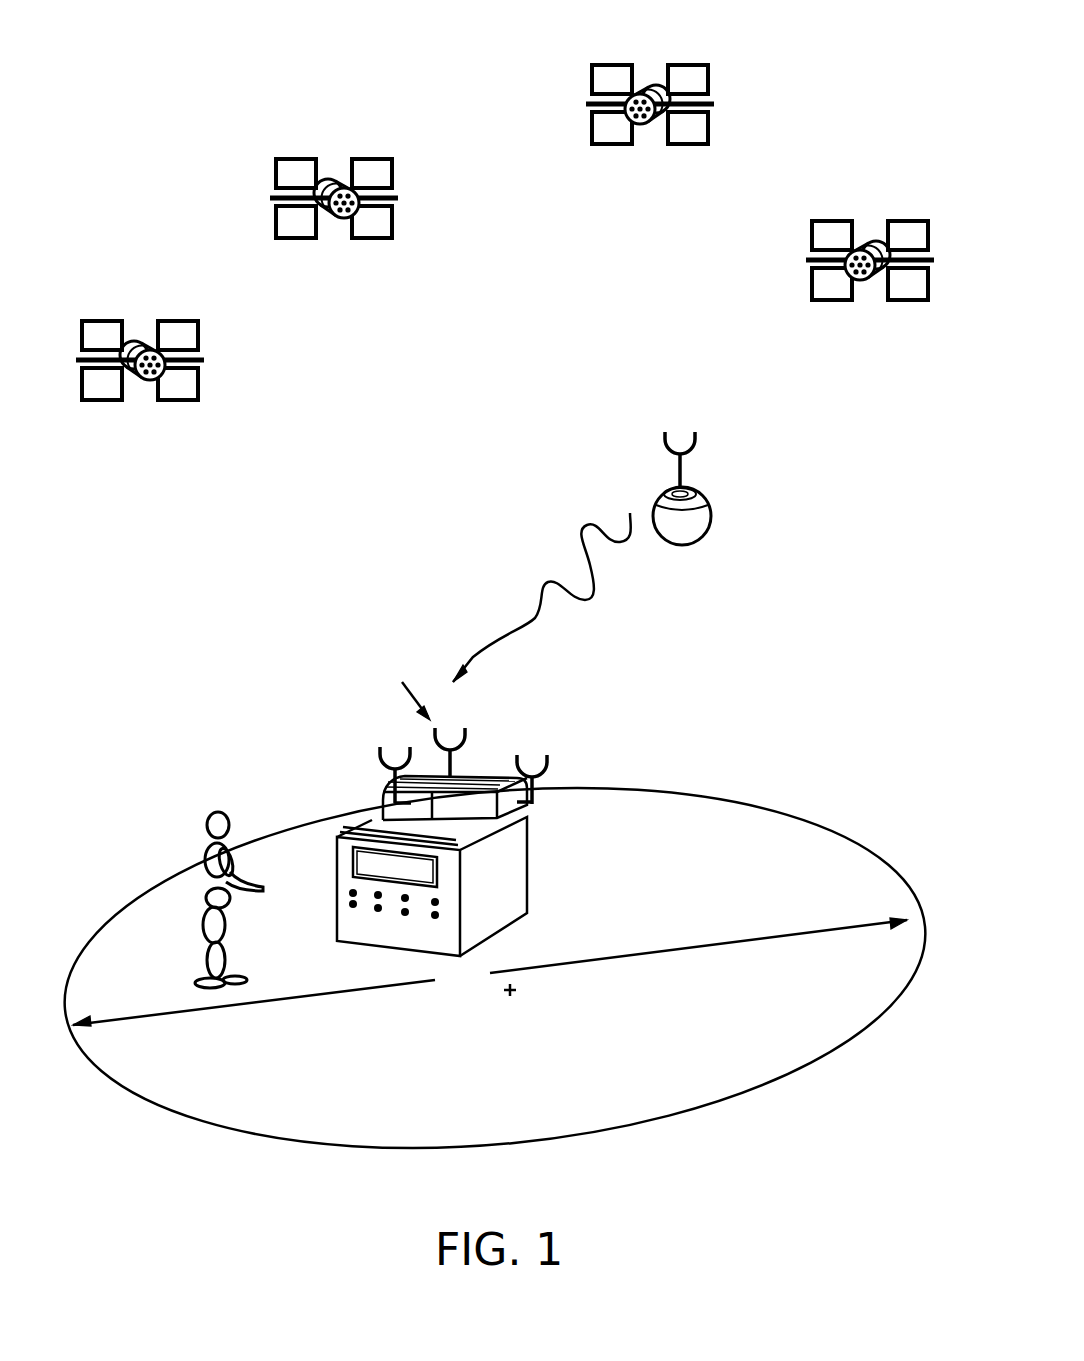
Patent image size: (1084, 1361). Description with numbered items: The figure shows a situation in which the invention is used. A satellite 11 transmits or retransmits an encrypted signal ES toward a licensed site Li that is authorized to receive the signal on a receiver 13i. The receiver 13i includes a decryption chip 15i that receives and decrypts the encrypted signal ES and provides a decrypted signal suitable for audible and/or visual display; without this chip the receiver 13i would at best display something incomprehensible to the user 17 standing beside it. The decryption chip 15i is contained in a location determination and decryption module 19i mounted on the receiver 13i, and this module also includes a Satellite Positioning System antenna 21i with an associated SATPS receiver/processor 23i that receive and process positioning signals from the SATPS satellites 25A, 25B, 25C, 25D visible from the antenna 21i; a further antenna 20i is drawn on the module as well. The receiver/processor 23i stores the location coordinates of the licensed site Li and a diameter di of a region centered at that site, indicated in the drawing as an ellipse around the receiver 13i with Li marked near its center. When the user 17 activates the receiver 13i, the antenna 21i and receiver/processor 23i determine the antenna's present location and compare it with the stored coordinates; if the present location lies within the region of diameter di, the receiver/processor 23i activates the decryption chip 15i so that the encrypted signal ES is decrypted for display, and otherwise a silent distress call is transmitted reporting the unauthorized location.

The satellite 11 is at (680, 522).
The receiver 13i is at (503, 898).
The decryption chip 15i is at (398, 808).
The user 17 is at (207, 842).
The location determination and decryption module 19i is at (494, 753).
The antenna 20i is at (537, 793).
The SATPS antenna 21i is at (453, 773).
The SATPS receiver/processor 23i is at (483, 777).
The SATPS satellite 25A is at (143, 352).
The SATPS satellite 25B is at (338, 192).
The SATPS satellite 25C is at (648, 100).
The SATPS satellite 25D is at (866, 253).
The encrypted signal ES is at (550, 597).
The licensed site Li is at (520, 993).
The diameter of the region di is at (495, 967).